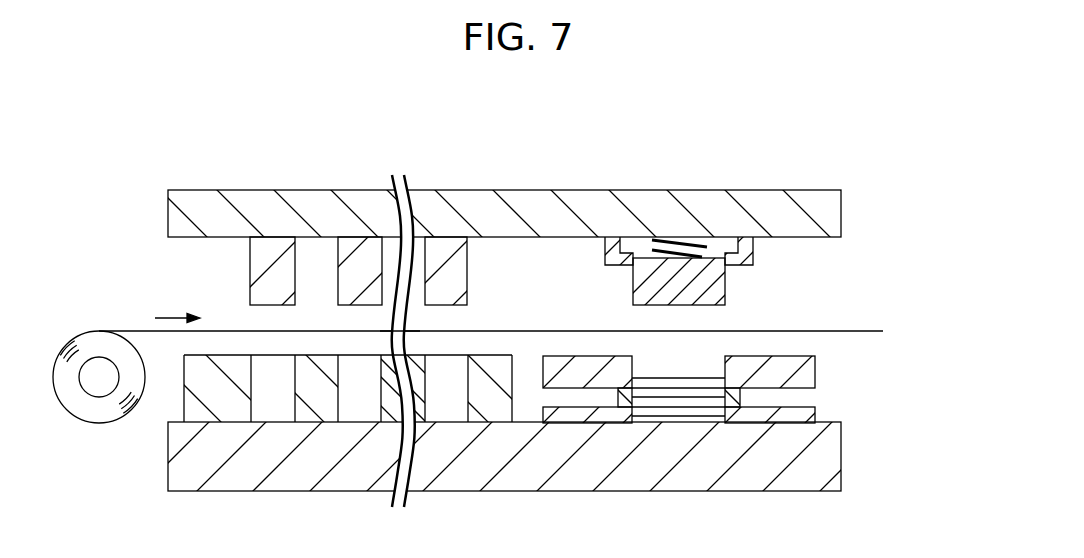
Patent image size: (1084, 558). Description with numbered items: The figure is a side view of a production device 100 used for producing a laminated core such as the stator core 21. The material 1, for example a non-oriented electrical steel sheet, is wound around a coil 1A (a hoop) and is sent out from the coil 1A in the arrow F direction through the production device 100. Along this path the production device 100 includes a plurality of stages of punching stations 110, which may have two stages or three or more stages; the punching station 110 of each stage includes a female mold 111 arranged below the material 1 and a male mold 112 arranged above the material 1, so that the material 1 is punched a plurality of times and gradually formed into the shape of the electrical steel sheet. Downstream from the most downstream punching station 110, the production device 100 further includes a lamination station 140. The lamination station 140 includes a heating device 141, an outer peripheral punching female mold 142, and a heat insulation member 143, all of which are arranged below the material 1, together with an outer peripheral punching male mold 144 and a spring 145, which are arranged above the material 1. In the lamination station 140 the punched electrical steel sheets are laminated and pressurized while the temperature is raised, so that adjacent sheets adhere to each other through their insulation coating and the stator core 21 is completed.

The production device 100 is at (888, 233).
The punching station 110 is at (273, 236).
The male mold 112 is at (258, 264).
The female mold 111 is at (258, 380).
The material 1 is at (137, 330).
The coil 1A is at (74, 413).
The arrow F direction F is at (172, 315).
The lamination station 140 is at (655, 231).
The spring 145 is at (692, 240).
The outer peripheral punching male mold 144 is at (727, 284).
The outer peripheral punching female mold 142 is at (815, 372).
The heat insulation member 143 is at (577, 418).
The heating device 141 is at (738, 393).
The stator core 21 is at (670, 407).